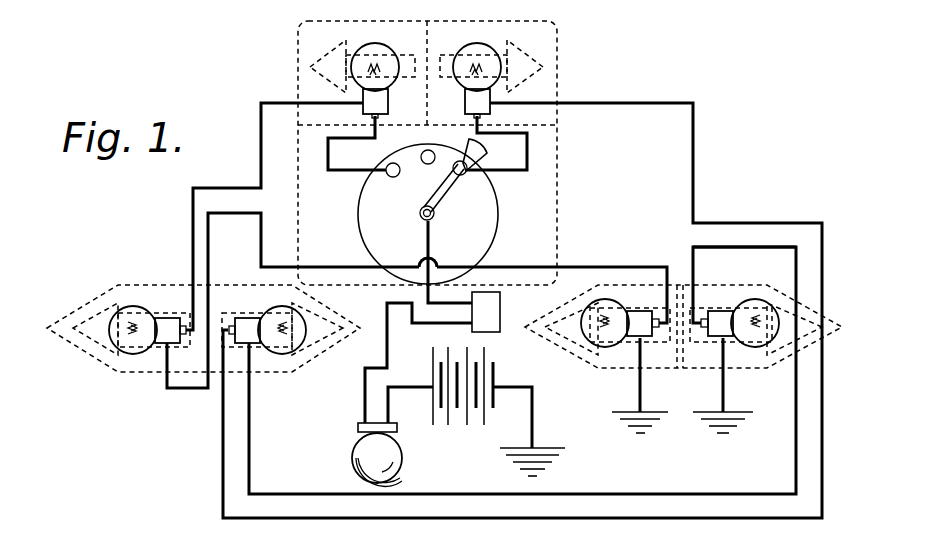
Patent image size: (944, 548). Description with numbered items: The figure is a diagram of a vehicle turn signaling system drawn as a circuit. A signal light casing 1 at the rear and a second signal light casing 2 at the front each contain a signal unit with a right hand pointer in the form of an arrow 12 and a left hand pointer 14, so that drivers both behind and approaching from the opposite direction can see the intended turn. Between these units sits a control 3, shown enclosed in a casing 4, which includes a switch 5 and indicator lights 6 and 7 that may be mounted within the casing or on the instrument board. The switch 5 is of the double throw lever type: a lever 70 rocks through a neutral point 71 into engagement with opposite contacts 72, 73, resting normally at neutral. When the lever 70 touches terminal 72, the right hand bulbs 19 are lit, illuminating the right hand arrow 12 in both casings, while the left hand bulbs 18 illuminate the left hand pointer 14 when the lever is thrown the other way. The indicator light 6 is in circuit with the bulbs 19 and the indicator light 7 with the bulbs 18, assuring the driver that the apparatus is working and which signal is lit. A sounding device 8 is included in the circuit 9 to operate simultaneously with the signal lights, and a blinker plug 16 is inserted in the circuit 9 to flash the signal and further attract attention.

The signal light casing 1 is at (679, 313).
The second signal light casing 2 is at (143, 283).
The control 3 is at (479, 149).
The casing 4 is at (555, 44).
The switch 5 is at (486, 213).
The indicator light 6 is at (498, 40).
The indicator light 7 is at (365, 41).
The sounding device 8 is at (360, 455).
The circuit 9 is at (732, 245).
The arrow 12 is at (788, 352).
The pointer 14 is at (573, 343).
The blinker plug 16 is at (484, 311).
The bulbs 18 is at (605, 352).
The bulbs 19 is at (752, 350).
The lever 70 is at (419, 211).
The neutral point 71 is at (424, 166).
The contact 72 is at (388, 176).
The contact 73 is at (468, 170).